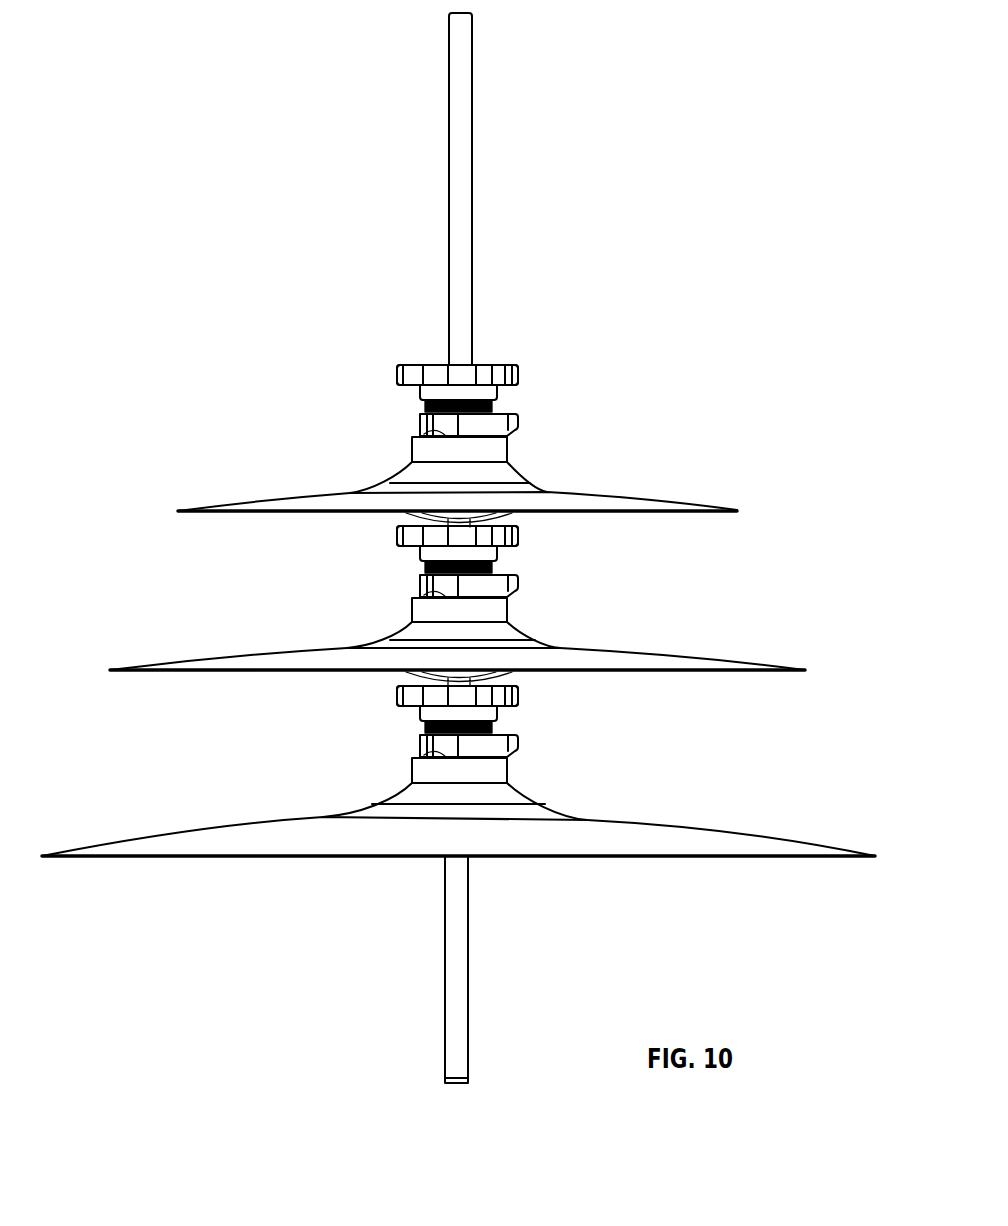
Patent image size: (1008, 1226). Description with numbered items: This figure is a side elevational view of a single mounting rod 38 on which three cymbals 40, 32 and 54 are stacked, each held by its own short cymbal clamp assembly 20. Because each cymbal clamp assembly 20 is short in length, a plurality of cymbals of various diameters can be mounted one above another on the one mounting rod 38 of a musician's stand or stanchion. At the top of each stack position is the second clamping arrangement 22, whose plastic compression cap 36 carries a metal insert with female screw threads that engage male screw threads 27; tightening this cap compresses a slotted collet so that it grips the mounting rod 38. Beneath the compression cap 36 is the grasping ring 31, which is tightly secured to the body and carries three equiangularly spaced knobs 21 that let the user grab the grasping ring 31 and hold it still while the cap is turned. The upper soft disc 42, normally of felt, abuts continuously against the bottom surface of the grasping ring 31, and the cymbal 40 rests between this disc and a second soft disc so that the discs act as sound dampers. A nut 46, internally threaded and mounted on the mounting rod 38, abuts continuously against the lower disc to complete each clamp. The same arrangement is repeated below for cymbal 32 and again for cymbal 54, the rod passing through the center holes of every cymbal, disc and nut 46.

The mounting rod 38 is at (461, 182).
The plastic compression cap 36 is at (521, 373).
The second clamping arrangement 22 is at (382, 378).
The cymbal clamp assembly 20 is at (592, 385).
The male screw threads 27 is at (423, 406).
The knobs 21 is at (520, 420).
The grasping ring 31 is at (480, 429).
The soft disc 42 is at (437, 450).
The cymbal 40 is at (605, 510).
The nut 46 is at (420, 516).
The cymbal 32 is at (687, 660).
The cymbal 54 is at (695, 843).